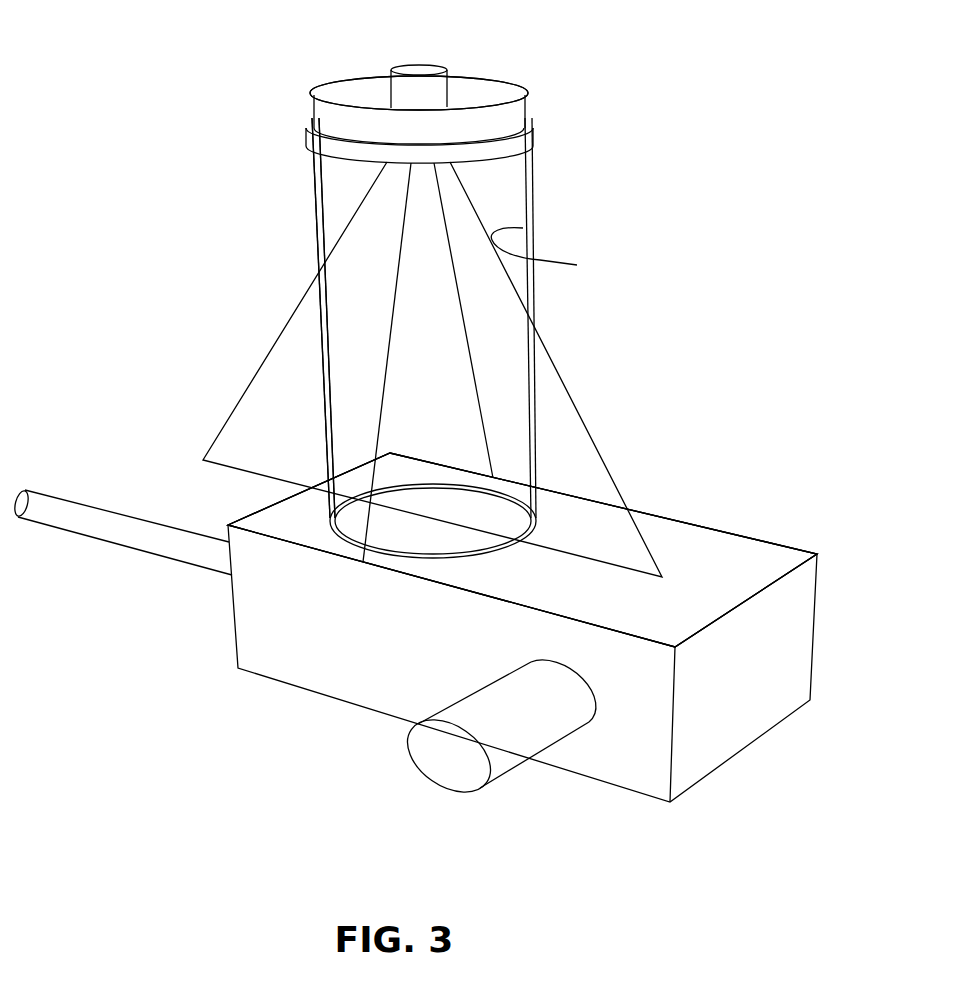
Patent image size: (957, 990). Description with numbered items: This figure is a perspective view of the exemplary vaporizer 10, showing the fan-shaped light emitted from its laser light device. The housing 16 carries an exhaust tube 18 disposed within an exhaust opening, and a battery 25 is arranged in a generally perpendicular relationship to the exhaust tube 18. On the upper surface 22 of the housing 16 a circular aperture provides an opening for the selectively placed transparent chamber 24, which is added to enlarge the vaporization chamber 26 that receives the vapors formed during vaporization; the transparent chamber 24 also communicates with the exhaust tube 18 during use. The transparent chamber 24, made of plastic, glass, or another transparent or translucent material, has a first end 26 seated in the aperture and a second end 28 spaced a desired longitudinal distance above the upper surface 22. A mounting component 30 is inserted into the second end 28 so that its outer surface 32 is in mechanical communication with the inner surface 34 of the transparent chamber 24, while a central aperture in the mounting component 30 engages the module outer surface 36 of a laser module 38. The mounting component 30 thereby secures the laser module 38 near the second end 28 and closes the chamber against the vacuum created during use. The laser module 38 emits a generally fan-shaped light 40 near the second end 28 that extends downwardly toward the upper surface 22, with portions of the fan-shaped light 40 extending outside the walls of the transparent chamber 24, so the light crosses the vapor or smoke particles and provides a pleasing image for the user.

The vaporizer 10 is at (660, 540).
The housing 16 is at (802, 583).
The exhaust tube 18 is at (121, 532).
The upper surface 22 is at (730, 550).
The transparent chamber 24 is at (503, 183).
The battery 25 is at (433, 762).
The vaporization chamber 26 is at (507, 525).
The second end 28 is at (310, 122).
The mounting component 30 is at (490, 93).
The outer surface 32 is at (508, 115).
The inner surface 34 is at (549, 246).
The module outer surface 36 is at (390, 87).
The laser module 38 is at (418, 70).
The fan-shaped light 40 is at (468, 333).